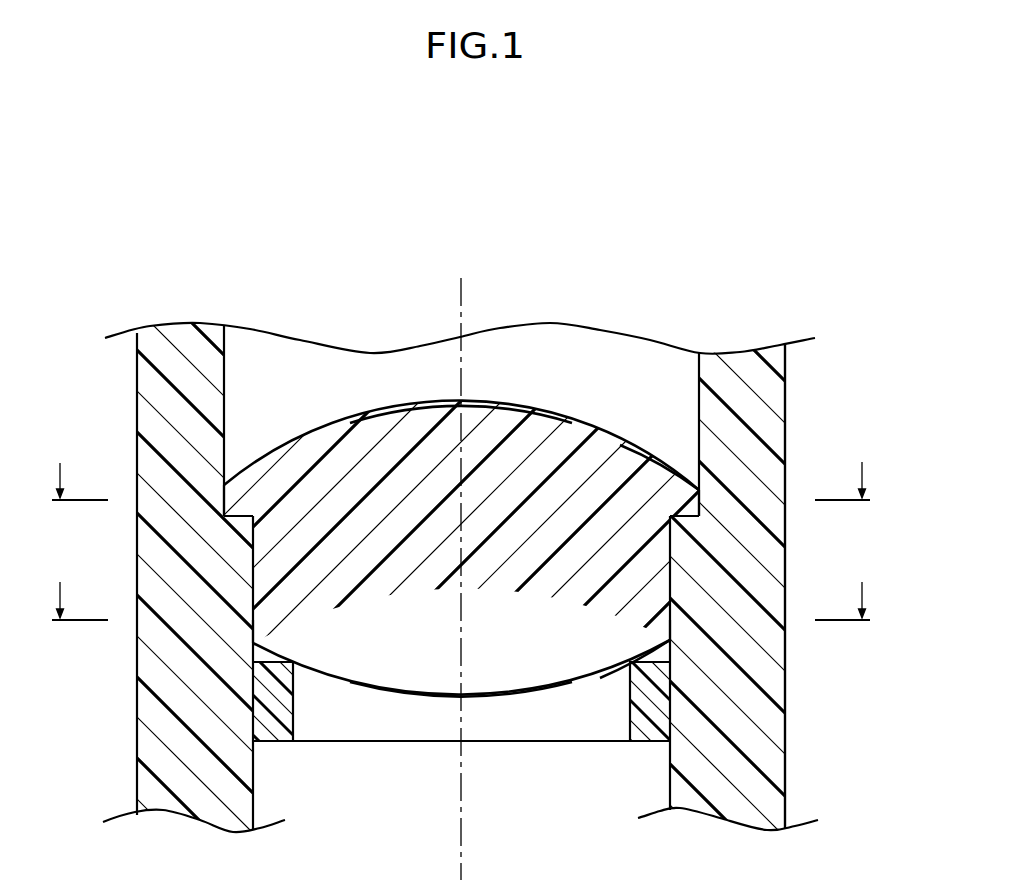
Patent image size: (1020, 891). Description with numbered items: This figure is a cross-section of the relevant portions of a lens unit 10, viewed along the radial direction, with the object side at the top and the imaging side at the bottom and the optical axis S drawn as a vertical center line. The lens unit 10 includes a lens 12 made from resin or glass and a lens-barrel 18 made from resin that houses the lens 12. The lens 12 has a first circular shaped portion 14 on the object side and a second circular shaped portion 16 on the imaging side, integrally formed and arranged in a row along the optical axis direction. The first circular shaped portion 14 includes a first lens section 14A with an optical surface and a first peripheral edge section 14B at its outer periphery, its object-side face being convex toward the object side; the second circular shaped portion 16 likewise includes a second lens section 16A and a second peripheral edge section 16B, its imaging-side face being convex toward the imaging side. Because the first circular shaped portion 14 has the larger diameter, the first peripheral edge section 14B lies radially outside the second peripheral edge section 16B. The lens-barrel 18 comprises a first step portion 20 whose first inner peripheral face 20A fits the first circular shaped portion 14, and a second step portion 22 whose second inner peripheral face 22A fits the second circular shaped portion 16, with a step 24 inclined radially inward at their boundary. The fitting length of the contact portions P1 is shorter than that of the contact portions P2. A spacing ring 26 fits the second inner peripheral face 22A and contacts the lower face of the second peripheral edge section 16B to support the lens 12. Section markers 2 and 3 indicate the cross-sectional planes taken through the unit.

The lens unit 10 is at (677, 260).
The lens 12 is at (337, 397).
The first circular shaped portion 14 is at (555, 406).
The first lens section 14A is at (437, 402).
The first peripheral edge section 14B is at (680, 490).
The second circular shaped portion 16 is at (531, 697).
The second lens section 16A is at (400, 696).
The second peripheral edge section 16B is at (653, 639).
The lens-barrel 18 is at (763, 343).
The first step portion 20 is at (787, 394).
The first inner peripheral face 20A is at (699, 397).
The second step portion 22 is at (787, 765).
The second inner peripheral face 22A is at (670, 782).
The step 24 is at (240, 580).
The spacing ring 26 is at (347, 743).
The contact portions P1 is at (222, 497).
The contact portions P2 is at (250, 632).
The optical axis S is at (463, 303).
The section line for FIG. 2 is at (461, 587).
The section line for FIG. 3 is at (461, 467).